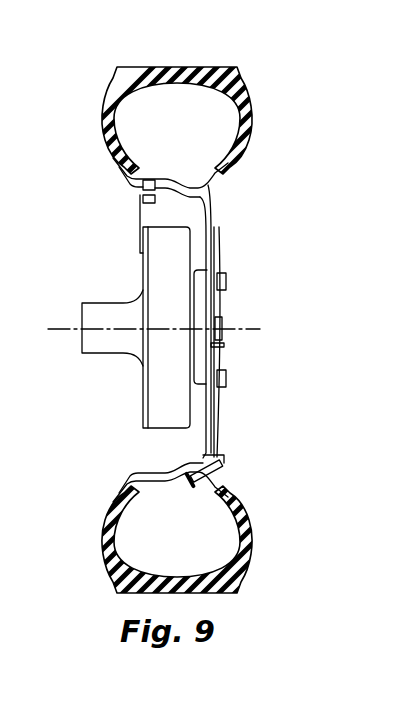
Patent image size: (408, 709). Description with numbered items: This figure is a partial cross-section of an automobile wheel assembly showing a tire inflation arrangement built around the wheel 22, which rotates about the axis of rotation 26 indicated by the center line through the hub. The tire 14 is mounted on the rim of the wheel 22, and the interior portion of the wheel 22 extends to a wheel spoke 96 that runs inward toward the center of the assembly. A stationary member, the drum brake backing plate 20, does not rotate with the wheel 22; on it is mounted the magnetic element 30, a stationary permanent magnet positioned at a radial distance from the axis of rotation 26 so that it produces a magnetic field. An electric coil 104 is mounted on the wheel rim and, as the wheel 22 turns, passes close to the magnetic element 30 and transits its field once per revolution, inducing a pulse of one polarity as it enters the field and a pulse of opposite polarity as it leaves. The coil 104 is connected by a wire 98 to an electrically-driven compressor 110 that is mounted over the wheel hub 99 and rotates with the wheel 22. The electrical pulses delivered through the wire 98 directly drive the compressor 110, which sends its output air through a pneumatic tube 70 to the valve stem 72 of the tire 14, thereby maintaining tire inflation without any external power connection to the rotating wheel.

The tire 14 is at (246, 106).
The wheel 22 is at (212, 191).
The wheel spoke 96 is at (213, 208).
The electric coil 104 is at (142, 187).
The magnetic element 30 is at (139, 198).
The drum brake backing plate 20 is at (141, 266).
The wire 98 is at (226, 275).
The electrically-driven compressor 110 is at (222, 318).
The axis of rotation 26 is at (259, 329).
The wheel hub 99 is at (224, 345).
The pneumatic tube 70 is at (219, 422).
The valve stem 72 is at (223, 474).